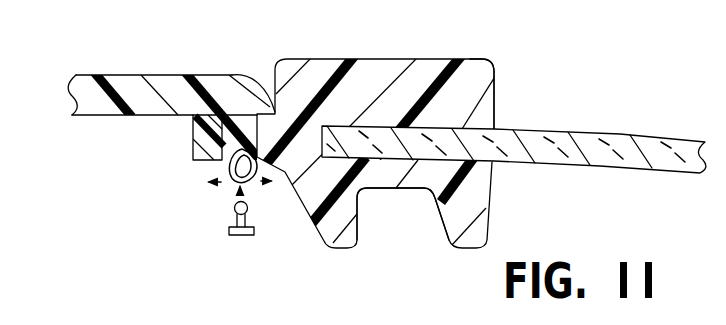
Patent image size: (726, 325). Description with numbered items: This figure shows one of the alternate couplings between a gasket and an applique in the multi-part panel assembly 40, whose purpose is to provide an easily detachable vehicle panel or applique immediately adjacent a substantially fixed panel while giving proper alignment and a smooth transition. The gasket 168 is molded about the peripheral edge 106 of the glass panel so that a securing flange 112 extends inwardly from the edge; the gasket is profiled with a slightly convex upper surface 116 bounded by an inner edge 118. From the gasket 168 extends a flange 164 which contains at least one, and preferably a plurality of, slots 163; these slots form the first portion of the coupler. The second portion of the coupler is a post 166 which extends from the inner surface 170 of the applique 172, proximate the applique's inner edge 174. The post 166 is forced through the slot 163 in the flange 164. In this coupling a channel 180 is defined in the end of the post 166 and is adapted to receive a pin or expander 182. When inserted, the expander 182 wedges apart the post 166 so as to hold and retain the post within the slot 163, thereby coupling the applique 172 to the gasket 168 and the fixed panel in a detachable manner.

The multi-part panel assembly 40 is at (578, 77).
The peripheral edge 106 is at (390, 148).
The securing flange 112 is at (484, 73).
The upper surface 116 is at (455, 58).
The inner edge 118 is at (495, 107).
The slot 163 is at (202, 197).
The flange 164 is at (196, 128).
The post 166 is at (227, 152).
The gasket 168 is at (365, 56).
The inner surface 170 is at (83, 122).
The applique 172 is at (126, 72).
The inner edge 174 is at (275, 92).
The channel 180 is at (232, 190).
The pin or expander 182 is at (236, 241).